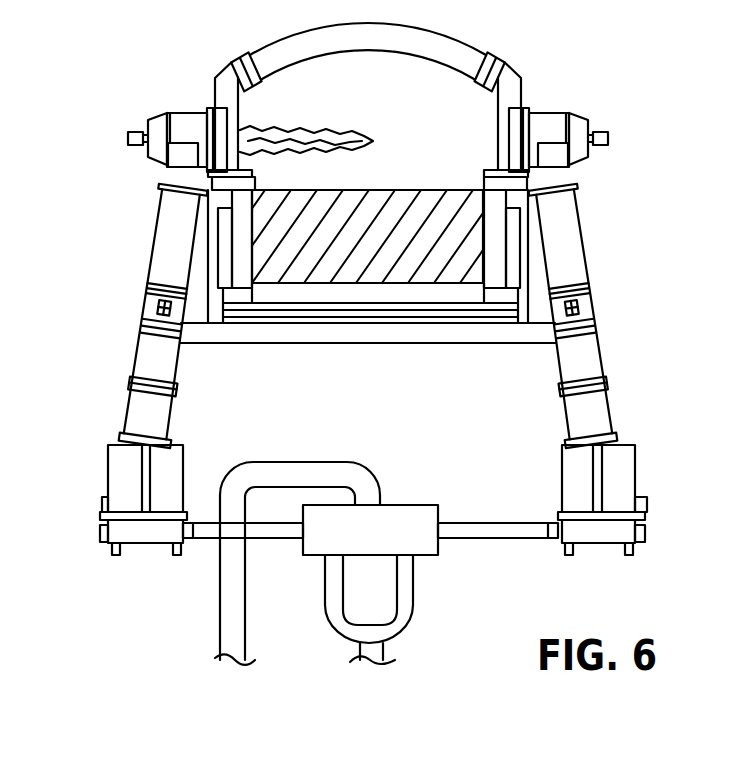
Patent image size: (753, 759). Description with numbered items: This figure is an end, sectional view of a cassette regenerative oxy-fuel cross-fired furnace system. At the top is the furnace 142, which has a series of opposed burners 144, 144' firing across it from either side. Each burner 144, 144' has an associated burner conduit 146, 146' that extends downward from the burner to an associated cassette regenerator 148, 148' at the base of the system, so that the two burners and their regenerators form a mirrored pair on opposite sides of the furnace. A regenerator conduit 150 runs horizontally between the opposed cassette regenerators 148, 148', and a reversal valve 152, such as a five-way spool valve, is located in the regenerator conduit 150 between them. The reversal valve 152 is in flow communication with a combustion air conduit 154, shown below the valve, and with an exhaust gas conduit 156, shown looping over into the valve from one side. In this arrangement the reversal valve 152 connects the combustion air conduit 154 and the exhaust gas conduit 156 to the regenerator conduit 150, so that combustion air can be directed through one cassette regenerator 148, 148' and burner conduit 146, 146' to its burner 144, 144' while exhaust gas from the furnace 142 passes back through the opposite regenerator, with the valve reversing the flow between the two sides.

The furnace 142 is at (401, 99).
The burner 144 is at (248, 120).
The burner 144' is at (558, 120).
The burner conduit 146 is at (147, 315).
The burner conduit 146' is at (598, 315).
The cassette regenerator 148 is at (107, 497).
The cassette regenerator 148' is at (639, 498).
The regenerator conduit 150 is at (490, 540).
The reversal valve 152 is at (418, 510).
The combustion air conduit 154 is at (387, 652).
The exhaust gas conduit 156 is at (220, 623).